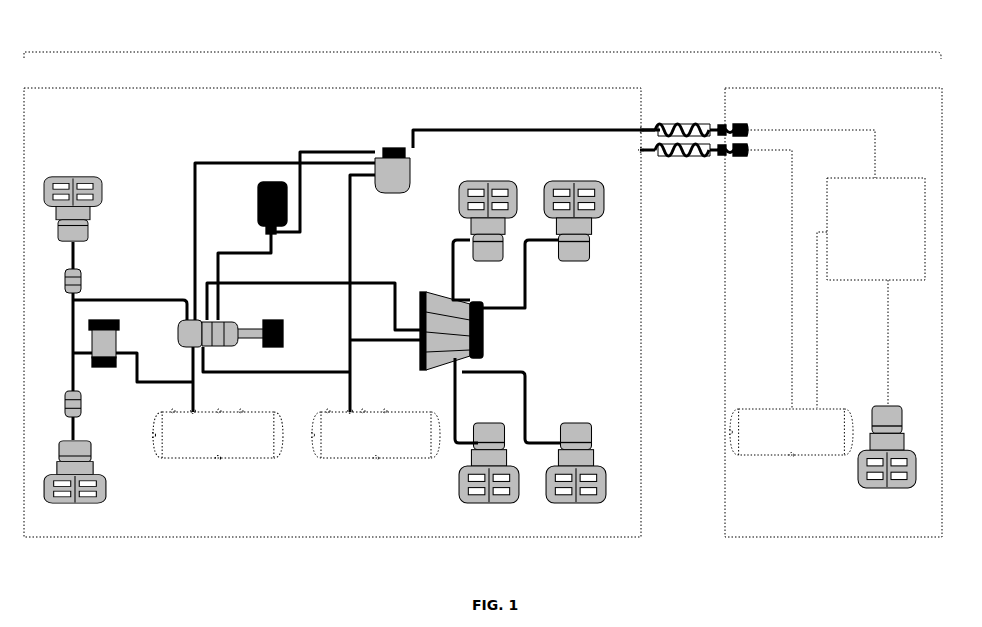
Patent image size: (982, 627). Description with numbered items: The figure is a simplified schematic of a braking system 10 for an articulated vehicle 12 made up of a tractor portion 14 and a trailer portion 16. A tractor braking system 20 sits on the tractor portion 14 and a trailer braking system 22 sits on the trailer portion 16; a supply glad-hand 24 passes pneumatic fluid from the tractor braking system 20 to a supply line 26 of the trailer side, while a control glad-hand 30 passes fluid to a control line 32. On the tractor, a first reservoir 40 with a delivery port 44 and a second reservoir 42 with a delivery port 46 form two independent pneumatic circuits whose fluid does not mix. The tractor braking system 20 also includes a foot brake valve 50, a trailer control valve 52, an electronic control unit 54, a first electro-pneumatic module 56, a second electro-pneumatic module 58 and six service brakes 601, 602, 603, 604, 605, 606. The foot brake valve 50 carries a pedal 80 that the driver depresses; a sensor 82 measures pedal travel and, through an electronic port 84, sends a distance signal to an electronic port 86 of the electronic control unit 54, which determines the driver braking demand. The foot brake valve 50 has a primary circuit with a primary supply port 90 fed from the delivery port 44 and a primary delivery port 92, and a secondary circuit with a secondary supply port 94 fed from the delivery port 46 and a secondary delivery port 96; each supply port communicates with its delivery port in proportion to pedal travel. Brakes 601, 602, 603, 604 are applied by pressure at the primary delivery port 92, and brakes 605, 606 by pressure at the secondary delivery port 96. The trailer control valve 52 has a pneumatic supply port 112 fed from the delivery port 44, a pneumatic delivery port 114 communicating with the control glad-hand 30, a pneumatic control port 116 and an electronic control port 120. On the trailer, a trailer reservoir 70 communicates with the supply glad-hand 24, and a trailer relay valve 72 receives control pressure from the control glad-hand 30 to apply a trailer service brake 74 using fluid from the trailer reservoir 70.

The braking system 10 is at (482, 38).
The vehicle 12 is at (490, 50).
The first portion 14 is at (332, 312).
The second portion 16 is at (833, 312).
The tractor braking system 20 is at (252, 225).
The trailer braking system 22 is at (860, 125).
The supply glad-hand 24 is at (750, 156).
The supply line 26 is at (690, 157).
The control glad-hand 30 is at (734, 124).
The control line 32 is at (666, 124).
The first supply 40 is at (375, 435).
The second supply 42 is at (216, 435).
The delivery port 44 is at (350, 412).
The delivery port 46 is at (198, 412).
The foot brake valve 50 is at (240, 320).
The trailer control valve 52 is at (418, 164).
The electronic control unit 54 is at (258, 210).
The first electro-pneumatic module 56 is at (118, 333).
The second electro-pneumatic module 58 is at (426, 292).
The service brake 601 is at (500, 264).
The service brake 602 is at (482, 420).
The service brake 603 is at (595, 264).
The service brake 604 is at (575, 420).
The service brake 605 is at (92, 237).
The service brake 606 is at (92, 444).
The trailer reservoir 70 is at (790, 433).
The trailer relay valve 72 is at (876, 229).
The trailer service brake 74 is at (903, 418).
The pedal 80 is at (250, 330).
The sensor 82 is at (283, 338).
The electronic port 84 is at (216, 323).
The electronic port 86 is at (276, 234).
The primary supply port 90 is at (205, 348).
The primary delivery port 92 is at (202, 300).
The secondary supply port 94 is at (188, 349).
The secondary delivery port 96 is at (186, 319).
The pneumatic supply port 112 is at (364, 178).
The pneumatic delivery port 114 is at (405, 152).
The pneumatic control port 116 is at (375, 164).
The electronic control port 120 is at (392, 147).